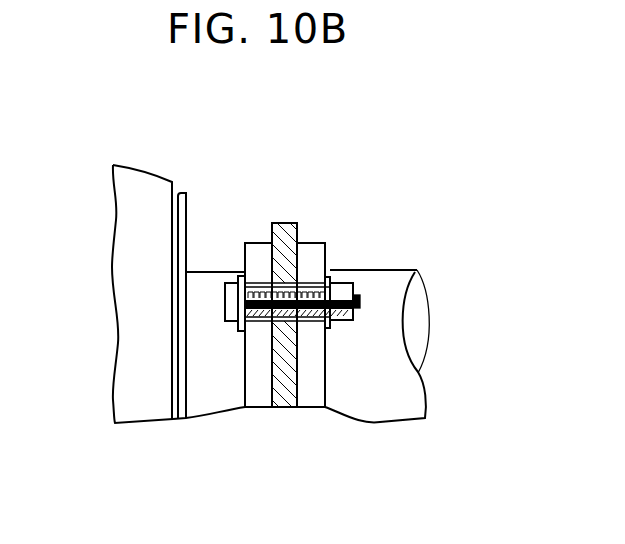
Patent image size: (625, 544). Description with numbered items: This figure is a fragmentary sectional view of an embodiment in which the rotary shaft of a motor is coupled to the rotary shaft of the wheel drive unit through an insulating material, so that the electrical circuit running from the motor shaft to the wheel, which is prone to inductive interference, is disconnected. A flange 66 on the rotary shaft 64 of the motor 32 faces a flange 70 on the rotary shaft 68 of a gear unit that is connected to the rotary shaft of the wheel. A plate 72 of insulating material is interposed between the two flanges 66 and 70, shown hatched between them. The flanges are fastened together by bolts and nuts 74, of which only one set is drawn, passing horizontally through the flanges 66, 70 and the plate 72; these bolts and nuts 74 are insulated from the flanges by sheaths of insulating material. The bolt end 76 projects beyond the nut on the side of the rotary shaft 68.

The motor 32 is at (142, 172).
The rotary shaft of the motor 64 is at (205, 273).
The flange of rotary shaft of the motor 66 is at (253, 242).
The plate of an insulating material 72 is at (285, 222).
The flange of rotary shaft of the gear unit 70 is at (312, 242).
The bolts and nuts 74 is at (329, 276).
The rotary shaft of the gear unit 68 is at (398, 276).
The bolt 76 is at (341, 326).